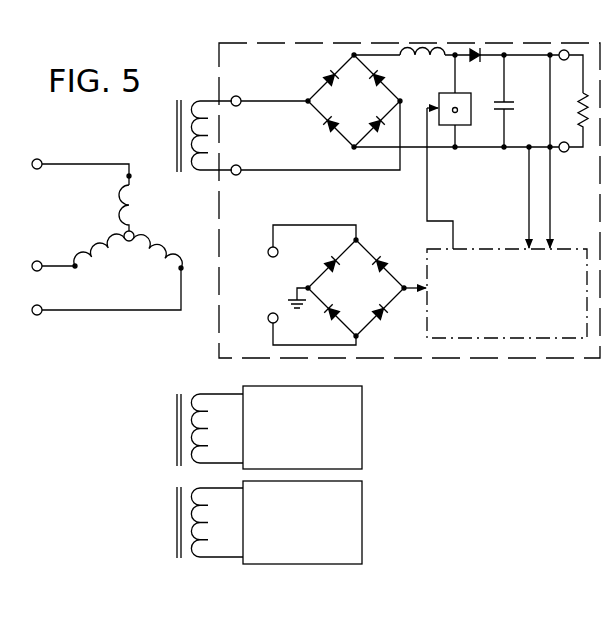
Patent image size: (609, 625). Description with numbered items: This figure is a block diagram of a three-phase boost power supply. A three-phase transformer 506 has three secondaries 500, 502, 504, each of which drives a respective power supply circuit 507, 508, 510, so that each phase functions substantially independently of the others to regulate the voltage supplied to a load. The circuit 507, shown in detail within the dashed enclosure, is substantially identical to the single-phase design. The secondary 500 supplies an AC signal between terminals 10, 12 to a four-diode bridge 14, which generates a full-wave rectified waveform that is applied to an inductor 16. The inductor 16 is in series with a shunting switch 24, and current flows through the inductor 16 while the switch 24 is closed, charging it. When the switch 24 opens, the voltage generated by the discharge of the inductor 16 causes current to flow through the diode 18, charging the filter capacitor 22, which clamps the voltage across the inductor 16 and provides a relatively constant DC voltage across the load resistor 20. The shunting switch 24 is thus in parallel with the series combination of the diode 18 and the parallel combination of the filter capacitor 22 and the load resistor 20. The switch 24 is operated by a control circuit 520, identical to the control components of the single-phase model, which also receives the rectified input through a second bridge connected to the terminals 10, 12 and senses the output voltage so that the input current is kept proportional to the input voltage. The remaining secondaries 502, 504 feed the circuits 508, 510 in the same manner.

The terminal 10 is at (240, 97).
The terminal 12 is at (238, 176).
The bridge 14 is at (386, 72).
The inductor 16 is at (444, 50).
The diode 18 is at (473, 49).
The load 20 is at (583, 101).
The capacitor 22 is at (509, 101).
The switch 24 is at (462, 106).
The secondary 500 is at (175, 130).
The secondary 502 is at (175, 423).
The secondary 504 is at (177, 502).
The three-phase transformer 506 is at (107, 141).
The power supply circuit 507 is at (538, 359).
The power supply circuit 508 is at (362, 418).
The power supply circuit 510 is at (362, 526).
The control circuit 520 is at (480, 249).